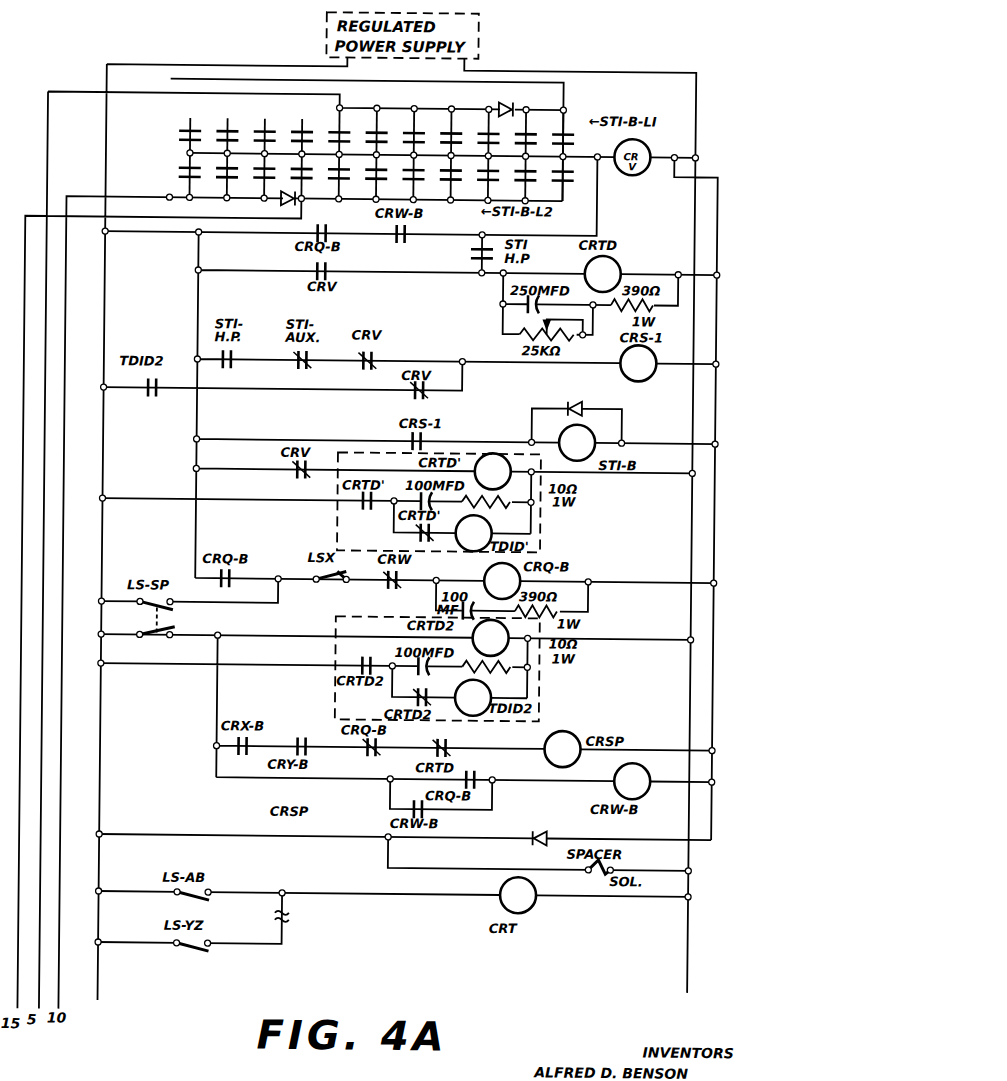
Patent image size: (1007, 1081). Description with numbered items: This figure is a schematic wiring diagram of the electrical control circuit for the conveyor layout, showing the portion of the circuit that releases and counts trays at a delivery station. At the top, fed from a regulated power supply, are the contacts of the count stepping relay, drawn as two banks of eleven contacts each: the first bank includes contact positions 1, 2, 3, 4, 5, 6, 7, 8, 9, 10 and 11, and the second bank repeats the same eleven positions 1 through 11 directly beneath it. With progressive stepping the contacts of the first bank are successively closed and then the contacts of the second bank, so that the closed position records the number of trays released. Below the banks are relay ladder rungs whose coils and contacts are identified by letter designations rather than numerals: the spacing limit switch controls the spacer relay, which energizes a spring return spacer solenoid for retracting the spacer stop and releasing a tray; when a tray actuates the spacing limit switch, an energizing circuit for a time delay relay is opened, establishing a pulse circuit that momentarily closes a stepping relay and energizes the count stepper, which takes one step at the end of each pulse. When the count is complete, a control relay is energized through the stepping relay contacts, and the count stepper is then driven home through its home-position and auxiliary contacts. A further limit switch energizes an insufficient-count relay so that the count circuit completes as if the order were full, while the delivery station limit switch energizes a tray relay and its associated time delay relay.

The count stepping relay contact 1 is at (190, 156).
The count stepping relay contact 2 is at (227, 156).
The count stepping relay contact 3 is at (264, 157).
The count stepping relay contact 4 is at (301, 157).
The count stepping relay contact 5 is at (339, 153).
The count stepping relay contact 6 is at (376, 153).
The count stepping relay contact 7 is at (414, 154).
The count stepping relay contact 8 is at (451, 154).
The count stepping relay contact 9 is at (488, 154).
The count stepping relay contact 10 is at (530, 155).
The count stepping relay contact 11 is at (567, 155).